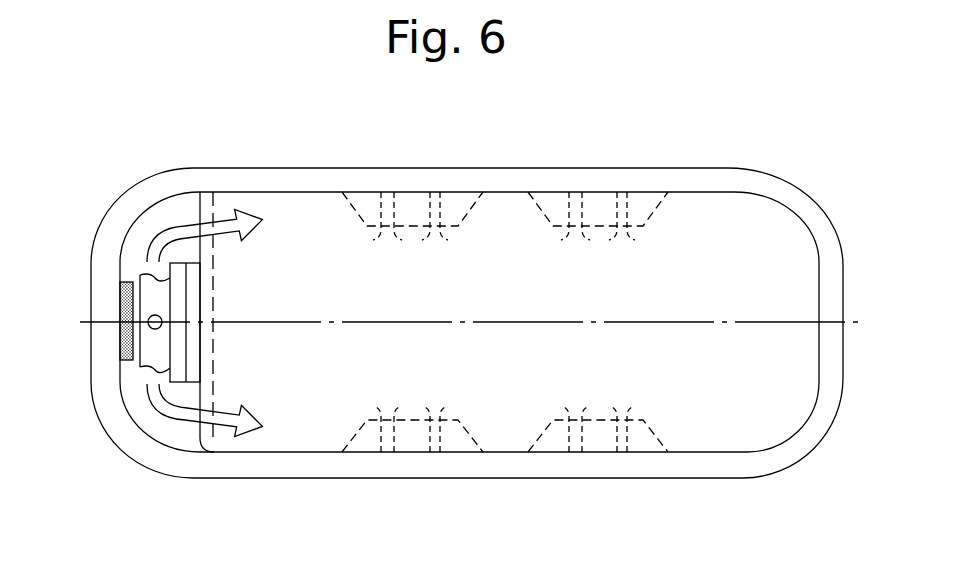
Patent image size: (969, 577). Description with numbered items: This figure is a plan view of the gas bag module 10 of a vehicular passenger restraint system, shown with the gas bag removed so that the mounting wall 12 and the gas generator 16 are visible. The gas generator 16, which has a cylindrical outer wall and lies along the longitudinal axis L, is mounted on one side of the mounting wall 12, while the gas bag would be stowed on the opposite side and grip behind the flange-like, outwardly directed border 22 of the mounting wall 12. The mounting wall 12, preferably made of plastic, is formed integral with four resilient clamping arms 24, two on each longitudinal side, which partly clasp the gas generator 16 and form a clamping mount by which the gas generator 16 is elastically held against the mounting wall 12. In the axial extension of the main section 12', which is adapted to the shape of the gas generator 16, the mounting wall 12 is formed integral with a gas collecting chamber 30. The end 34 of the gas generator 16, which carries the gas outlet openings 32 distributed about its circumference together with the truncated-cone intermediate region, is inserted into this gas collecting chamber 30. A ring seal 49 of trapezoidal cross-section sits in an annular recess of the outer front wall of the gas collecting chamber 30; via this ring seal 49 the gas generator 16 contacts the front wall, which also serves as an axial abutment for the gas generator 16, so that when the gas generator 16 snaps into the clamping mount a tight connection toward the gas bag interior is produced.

The gas bag module 10 is at (694, 158).
The mounting wall 12 is at (469, 286).
The main section 12' is at (256, 287).
The gas generator 16 is at (193, 398).
The border 22 is at (788, 450).
The resilient clamping arms 24 is at (412, 236).
The gas collecting chamber 30 is at (144, 406).
The gas outlet openings 32 is at (150, 329).
The end of the gas generator 34 is at (143, 272).
The ring seal 49 is at (120, 303).
The longitudinal axis L is at (857, 325).